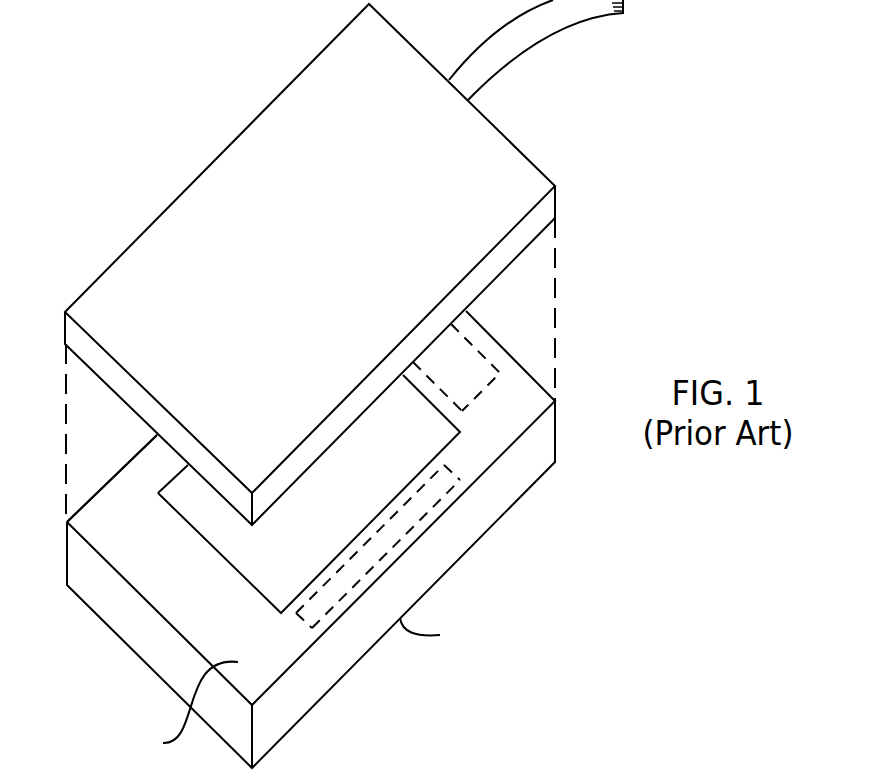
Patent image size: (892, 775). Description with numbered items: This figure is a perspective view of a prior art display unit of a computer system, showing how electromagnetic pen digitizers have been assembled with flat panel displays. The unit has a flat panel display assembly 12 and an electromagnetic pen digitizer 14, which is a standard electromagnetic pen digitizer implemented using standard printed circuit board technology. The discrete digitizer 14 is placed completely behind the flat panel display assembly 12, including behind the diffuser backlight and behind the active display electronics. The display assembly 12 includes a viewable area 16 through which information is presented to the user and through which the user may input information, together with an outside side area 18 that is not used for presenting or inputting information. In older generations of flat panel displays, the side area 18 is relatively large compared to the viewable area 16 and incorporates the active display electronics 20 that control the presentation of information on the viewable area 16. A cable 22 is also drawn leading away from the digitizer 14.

The flat panel display assembly 12 is at (490, 502).
The electromagnetic pen digitizer 14 is at (229, 175).
The viewable area 16 is at (388, 475).
The outside side area 18 is at (112, 508).
The active display electronics 20 is at (473, 380).
The cable 22 is at (537, 32).